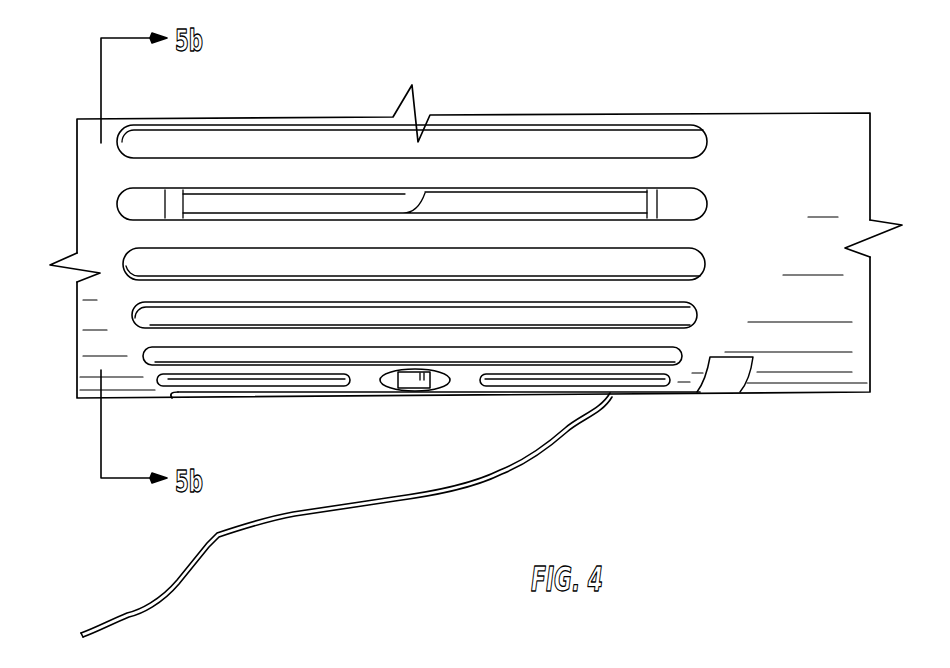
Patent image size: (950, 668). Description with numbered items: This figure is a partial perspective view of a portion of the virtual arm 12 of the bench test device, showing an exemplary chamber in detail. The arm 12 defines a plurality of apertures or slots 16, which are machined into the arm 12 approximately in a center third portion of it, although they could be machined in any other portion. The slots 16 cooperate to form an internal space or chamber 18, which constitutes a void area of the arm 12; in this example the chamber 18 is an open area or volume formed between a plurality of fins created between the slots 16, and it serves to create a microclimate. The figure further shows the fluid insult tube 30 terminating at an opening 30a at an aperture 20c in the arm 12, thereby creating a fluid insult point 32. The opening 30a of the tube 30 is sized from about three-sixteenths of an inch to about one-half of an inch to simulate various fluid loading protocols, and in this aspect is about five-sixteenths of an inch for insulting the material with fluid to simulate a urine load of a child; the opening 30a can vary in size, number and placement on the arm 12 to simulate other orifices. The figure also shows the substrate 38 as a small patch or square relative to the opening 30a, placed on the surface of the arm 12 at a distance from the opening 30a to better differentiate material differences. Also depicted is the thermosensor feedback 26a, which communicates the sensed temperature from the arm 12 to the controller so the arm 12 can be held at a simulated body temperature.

The virtual arm 12 is at (815, 263).
The slots 16 is at (677, 141).
The chamber 18 is at (245, 316).
The fluid insult tube 30 is at (665, 206).
The opening 30a is at (413, 390).
The aperture 20c is at (438, 388).
The fluid insult point 32 is at (450, 373).
The substrate 38 is at (737, 388).
The thermosensor feedback 26a is at (614, 395).